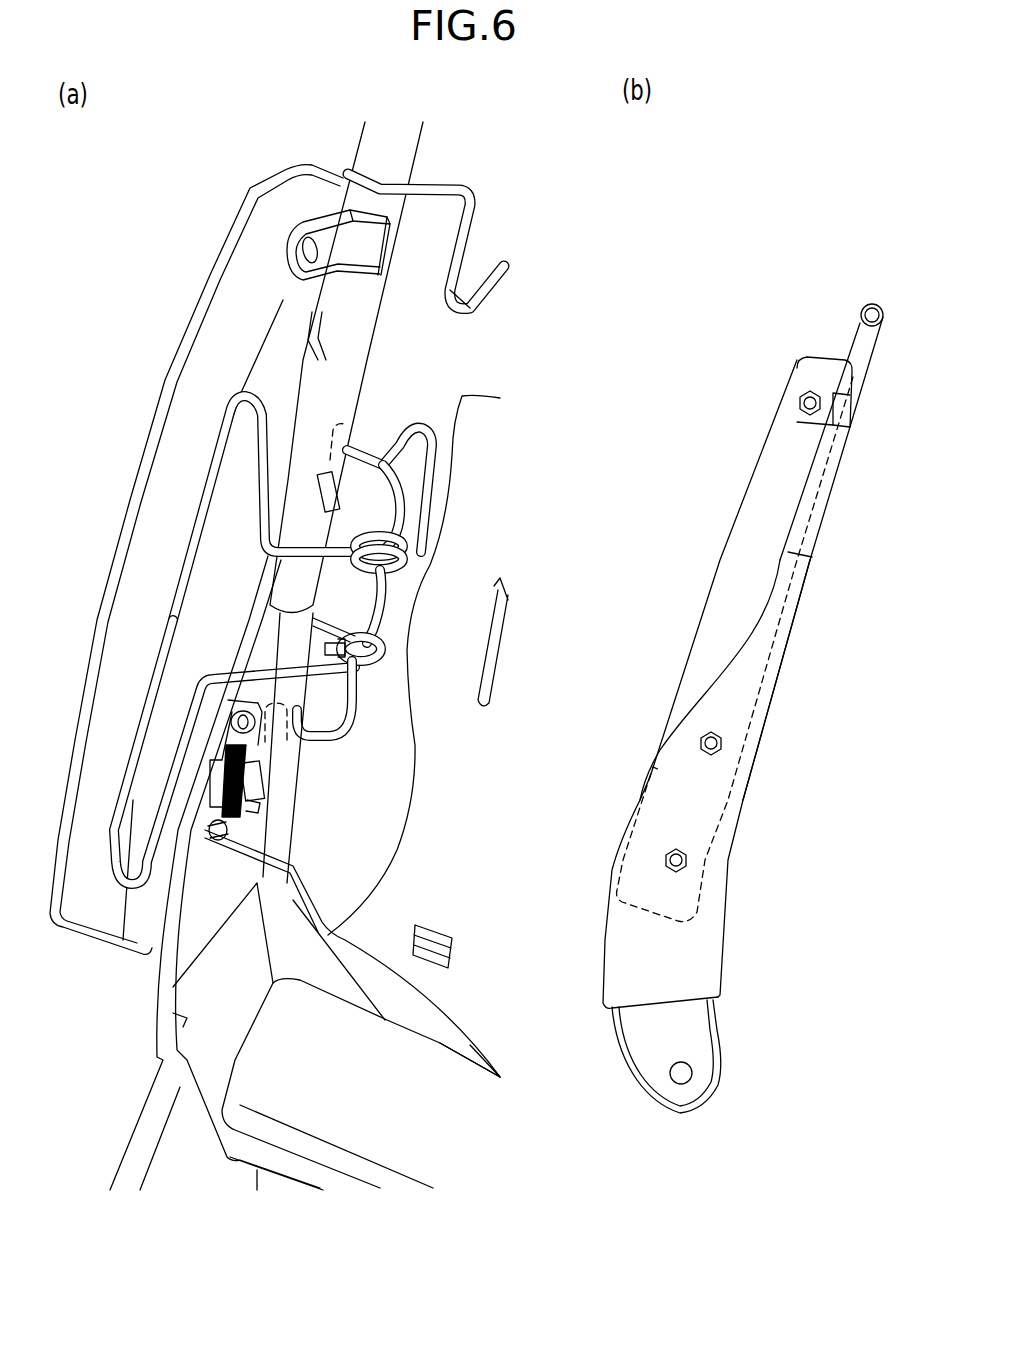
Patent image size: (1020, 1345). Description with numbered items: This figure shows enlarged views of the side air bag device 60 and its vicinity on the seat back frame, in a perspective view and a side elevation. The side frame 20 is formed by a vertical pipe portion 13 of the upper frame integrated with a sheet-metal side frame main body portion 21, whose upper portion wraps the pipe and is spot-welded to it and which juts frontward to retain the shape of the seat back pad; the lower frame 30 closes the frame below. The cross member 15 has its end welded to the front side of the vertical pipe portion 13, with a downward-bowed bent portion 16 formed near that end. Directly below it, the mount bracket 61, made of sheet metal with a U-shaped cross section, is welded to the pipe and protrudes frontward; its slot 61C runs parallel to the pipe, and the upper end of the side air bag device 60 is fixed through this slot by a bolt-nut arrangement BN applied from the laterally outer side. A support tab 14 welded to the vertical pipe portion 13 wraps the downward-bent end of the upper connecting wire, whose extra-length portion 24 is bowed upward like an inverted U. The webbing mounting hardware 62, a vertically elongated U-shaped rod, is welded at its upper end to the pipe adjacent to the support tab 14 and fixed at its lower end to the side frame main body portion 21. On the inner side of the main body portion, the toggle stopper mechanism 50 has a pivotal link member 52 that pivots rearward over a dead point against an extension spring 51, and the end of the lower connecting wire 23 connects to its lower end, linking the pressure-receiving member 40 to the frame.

The vertical pipe portion 13 is at (360, 330).
The support tab 14 is at (345, 497).
The cross member 15 is at (447, 182).
The bent portion 16 is at (462, 312).
The side frame 20 is at (654, 510).
The side frame main body portion 21 is at (163, 967).
The lower connecting wire 23 is at (320, 897).
The extra-length portion 24 is at (425, 424).
The lower frame 30 is at (227, 1075).
The pressure-receiving member 40 is at (465, 1023).
The toggle stopper mechanism 50 is at (263, 763).
The extension spring 51 is at (270, 795).
The pivotal link member 52 is at (217, 835).
The side air bag device 60 is at (188, 318).
The mount bracket 61 is at (313, 243).
The slot 61C is at (293, 260).
The webbing mounting hardware 62 is at (385, 603).
The bolt-nut arrangement BN is at (803, 395).